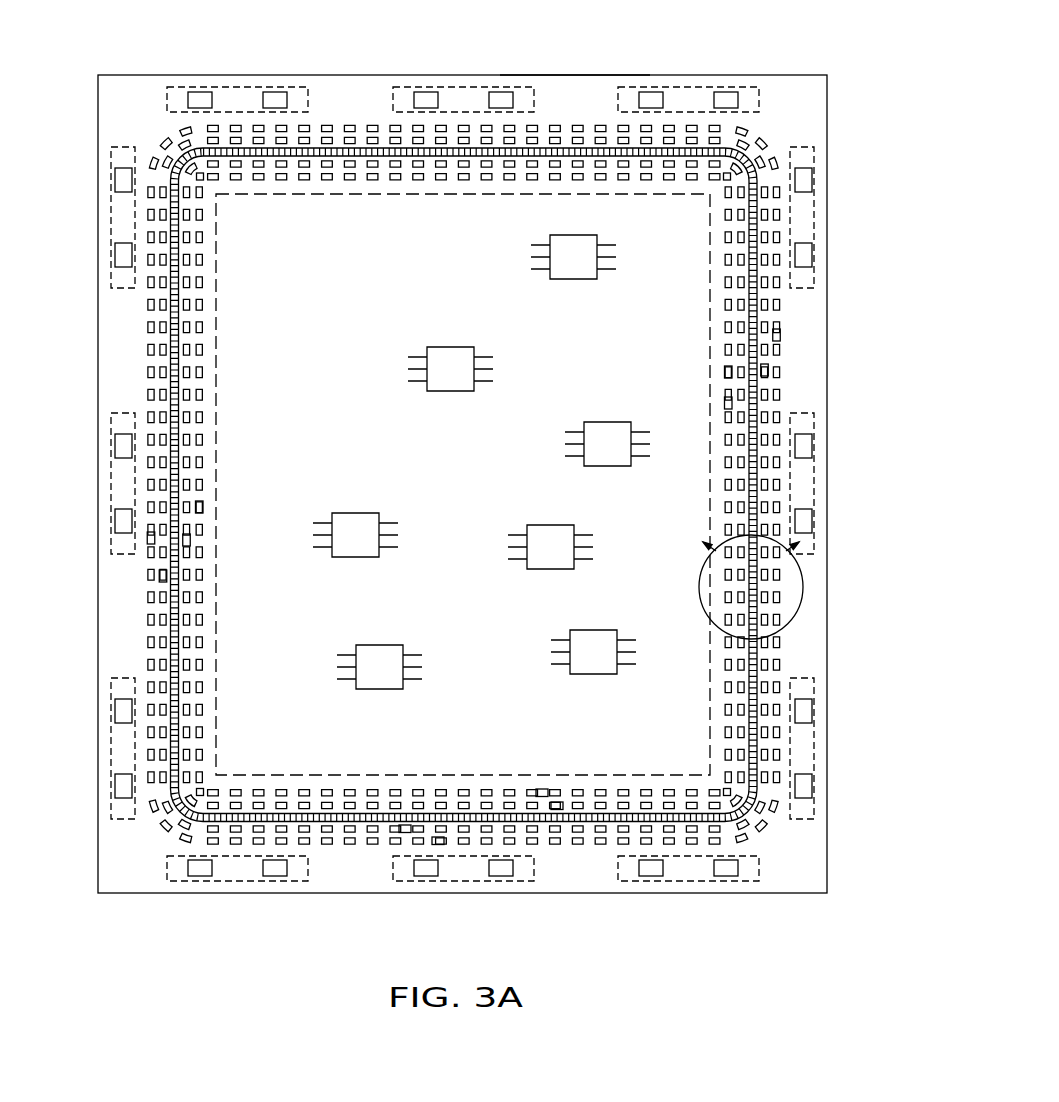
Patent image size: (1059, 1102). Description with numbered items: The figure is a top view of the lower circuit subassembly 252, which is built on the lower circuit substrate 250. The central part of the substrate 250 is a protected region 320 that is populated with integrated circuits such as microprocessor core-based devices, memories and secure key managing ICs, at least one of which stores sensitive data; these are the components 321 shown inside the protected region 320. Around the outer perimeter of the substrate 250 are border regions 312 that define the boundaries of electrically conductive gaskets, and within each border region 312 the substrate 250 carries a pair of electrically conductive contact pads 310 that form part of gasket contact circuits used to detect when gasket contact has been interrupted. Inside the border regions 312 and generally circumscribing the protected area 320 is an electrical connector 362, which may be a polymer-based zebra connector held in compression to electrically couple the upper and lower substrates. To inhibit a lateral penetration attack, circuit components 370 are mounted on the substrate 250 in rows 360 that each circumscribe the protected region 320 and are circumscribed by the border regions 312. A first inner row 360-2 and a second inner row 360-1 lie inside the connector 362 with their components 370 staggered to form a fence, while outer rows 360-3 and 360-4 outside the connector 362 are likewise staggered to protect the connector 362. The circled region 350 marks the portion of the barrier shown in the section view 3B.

The lower circuit substrate 250 is at (172, 75).
The lower circuit subassembly 252 is at (572, 75).
The electrically conductive contact pads 310 is at (652, 90).
The border regions 312 is at (237, 88).
The protected region 320 is at (457, 194).
The integrated circuit components 321 is at (573, 279).
The pad ring region 350 is at (808, 583).
The rows of circuit components 360 is at (464, 485).
The second inner row 360-1 is at (188, 337).
The first inner row 360-2 is at (205, 300).
The outer row 360-3 is at (165, 415).
The outer row 360-4 is at (153, 382).
The electrical connector 362 is at (727, 232).
The circuit components 370 is at (163, 576).
The section view indicator 3B is at (763, 541).